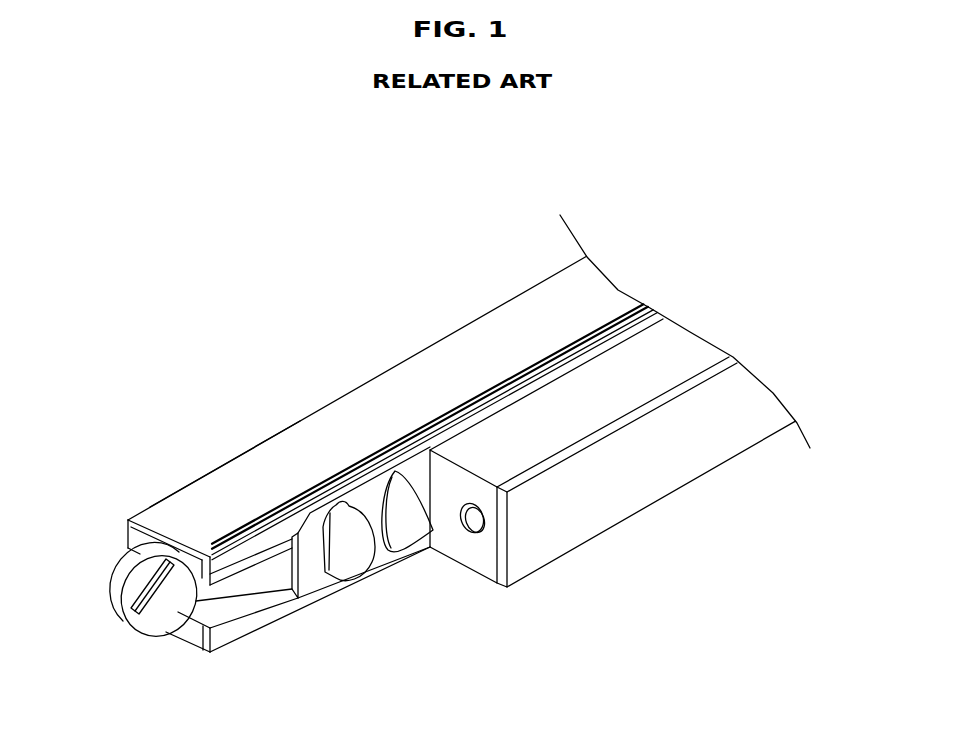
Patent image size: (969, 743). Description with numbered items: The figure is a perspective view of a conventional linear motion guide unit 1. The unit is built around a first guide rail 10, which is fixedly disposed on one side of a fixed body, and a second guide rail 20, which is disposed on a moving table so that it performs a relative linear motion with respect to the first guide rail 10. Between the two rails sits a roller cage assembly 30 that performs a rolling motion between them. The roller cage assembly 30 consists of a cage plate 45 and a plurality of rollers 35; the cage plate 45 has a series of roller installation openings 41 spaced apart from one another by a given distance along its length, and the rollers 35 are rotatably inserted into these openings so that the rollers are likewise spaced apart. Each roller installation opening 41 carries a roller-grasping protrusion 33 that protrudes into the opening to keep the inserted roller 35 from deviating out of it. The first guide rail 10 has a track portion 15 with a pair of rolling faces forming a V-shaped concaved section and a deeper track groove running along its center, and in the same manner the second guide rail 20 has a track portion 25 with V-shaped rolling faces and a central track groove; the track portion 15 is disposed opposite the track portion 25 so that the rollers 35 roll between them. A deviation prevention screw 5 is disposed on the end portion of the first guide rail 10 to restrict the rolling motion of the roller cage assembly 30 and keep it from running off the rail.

The linear motion guide unit 1 is at (810, 203).
The first guide rail 10 is at (333, 421).
The roller-grasping protrusion 33 is at (346, 505).
The roller installation opening 41 is at (262, 531).
The track portion 15 is at (238, 607).
The deviation prevention screw 5 is at (133, 581).
The roller cage assembly 30 is at (315, 594).
The roller 35 is at (347, 546).
The cage plate 45 is at (385, 552).
The second guide rail 20 is at (742, 407).
The track portion 25 is at (442, 516).